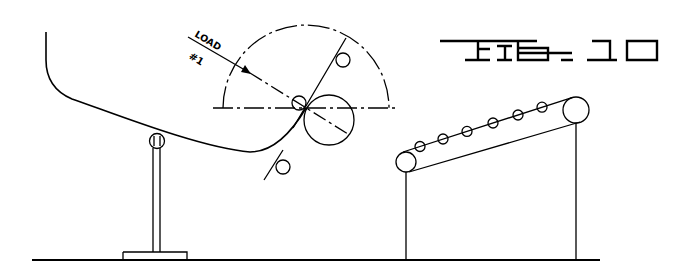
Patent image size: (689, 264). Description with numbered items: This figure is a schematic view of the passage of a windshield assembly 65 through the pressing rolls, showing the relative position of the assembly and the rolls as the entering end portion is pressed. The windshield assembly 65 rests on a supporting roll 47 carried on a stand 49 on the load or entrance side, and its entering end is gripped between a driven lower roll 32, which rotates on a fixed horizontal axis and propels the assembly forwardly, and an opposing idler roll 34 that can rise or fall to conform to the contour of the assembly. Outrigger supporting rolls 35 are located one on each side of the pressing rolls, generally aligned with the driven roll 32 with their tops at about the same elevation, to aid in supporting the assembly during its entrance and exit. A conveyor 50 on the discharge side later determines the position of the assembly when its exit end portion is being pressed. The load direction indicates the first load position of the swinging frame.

The windshield assembly 65 is at (78, 98).
The supporting roll 47 is at (149, 142).
The stand 49 is at (160, 221).
The idler rolls 34 is at (302, 96).
The outrigger supporting rolls 35 is at (350, 60).
The driven lower rolls 32 is at (332, 146).
The conveyor 50 is at (494, 118).